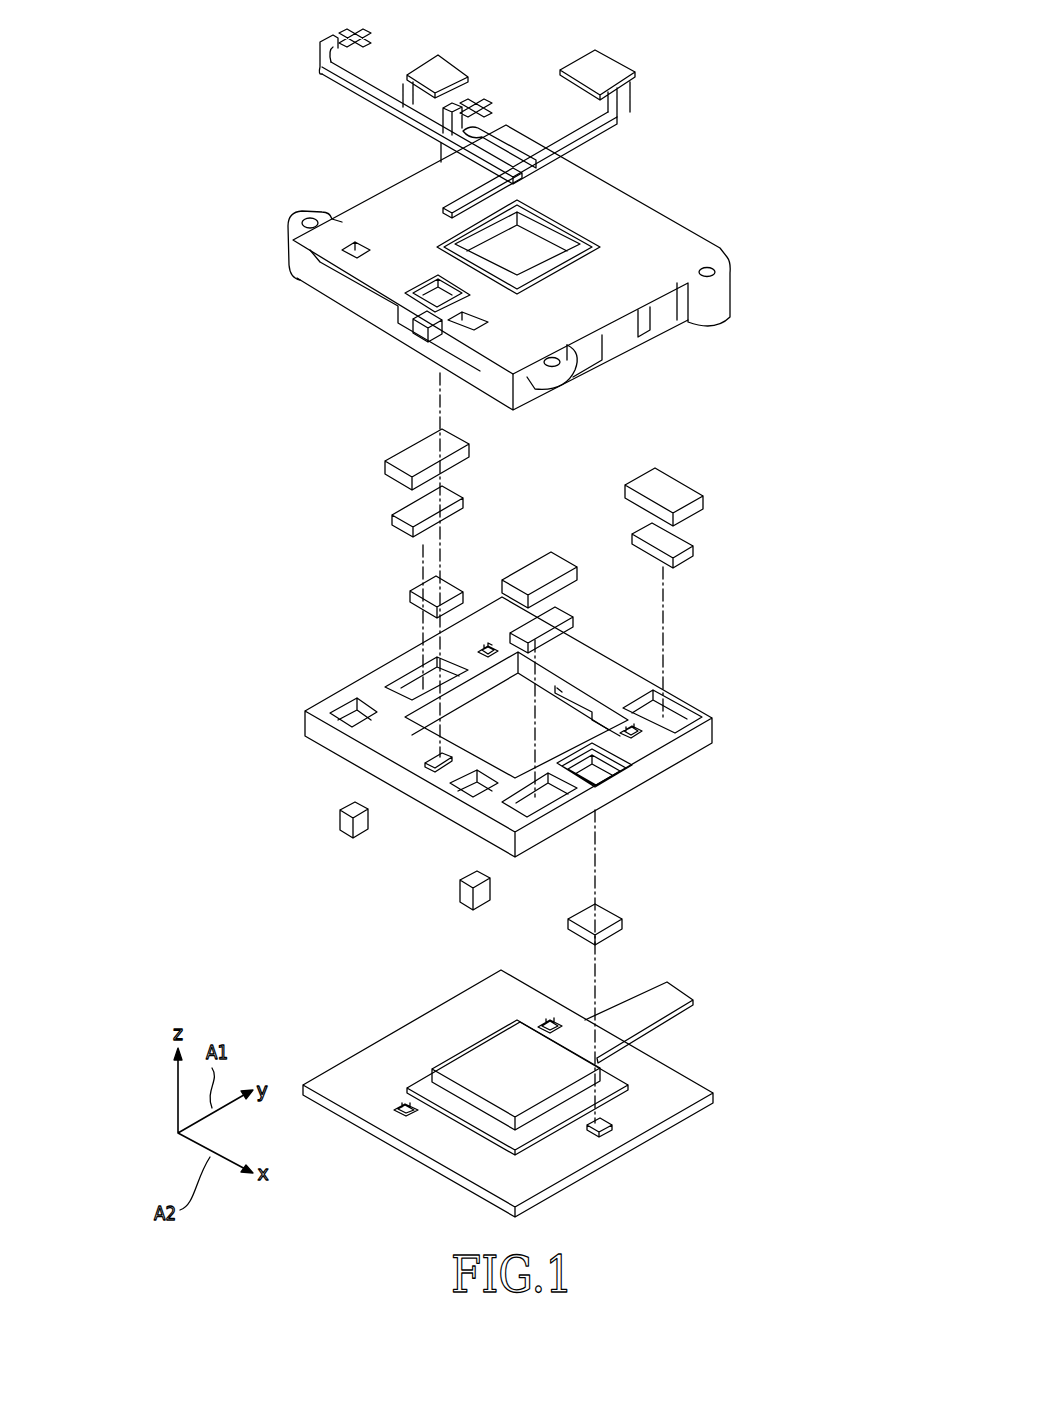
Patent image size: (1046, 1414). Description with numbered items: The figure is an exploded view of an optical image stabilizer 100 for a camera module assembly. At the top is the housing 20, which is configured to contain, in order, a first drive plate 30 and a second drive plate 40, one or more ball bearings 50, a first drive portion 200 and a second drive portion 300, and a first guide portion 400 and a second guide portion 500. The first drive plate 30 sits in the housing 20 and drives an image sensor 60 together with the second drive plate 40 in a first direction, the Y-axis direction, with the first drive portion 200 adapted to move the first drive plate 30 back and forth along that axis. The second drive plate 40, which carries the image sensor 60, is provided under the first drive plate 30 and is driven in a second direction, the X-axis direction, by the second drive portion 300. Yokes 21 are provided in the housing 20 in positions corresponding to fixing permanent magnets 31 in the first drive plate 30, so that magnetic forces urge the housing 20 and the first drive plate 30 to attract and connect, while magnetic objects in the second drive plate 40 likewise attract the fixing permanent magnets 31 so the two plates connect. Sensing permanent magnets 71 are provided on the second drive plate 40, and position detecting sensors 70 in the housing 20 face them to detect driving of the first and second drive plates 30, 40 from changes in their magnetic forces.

The optical image stabilizer 100 is at (708, 136).
The position detecting sensors 70 is at (467, 127).
The housing 20 is at (397, 203).
The yokes 21 is at (548, 565).
The fixing permanent magnets 31 is at (555, 612).
The first drive portion 200 is at (408, 597).
The first drive plate 30 is at (362, 688).
The first guide portion 400 is at (432, 757).
The ball bearings 50 is at (403, 1108).
The sensing permanent magnets 71 is at (462, 892).
The second drive portion 300 is at (605, 908).
The second drive plate 40 is at (355, 1068).
The image sensor 60 is at (500, 1090).
The second guide portion 500 is at (607, 1128).